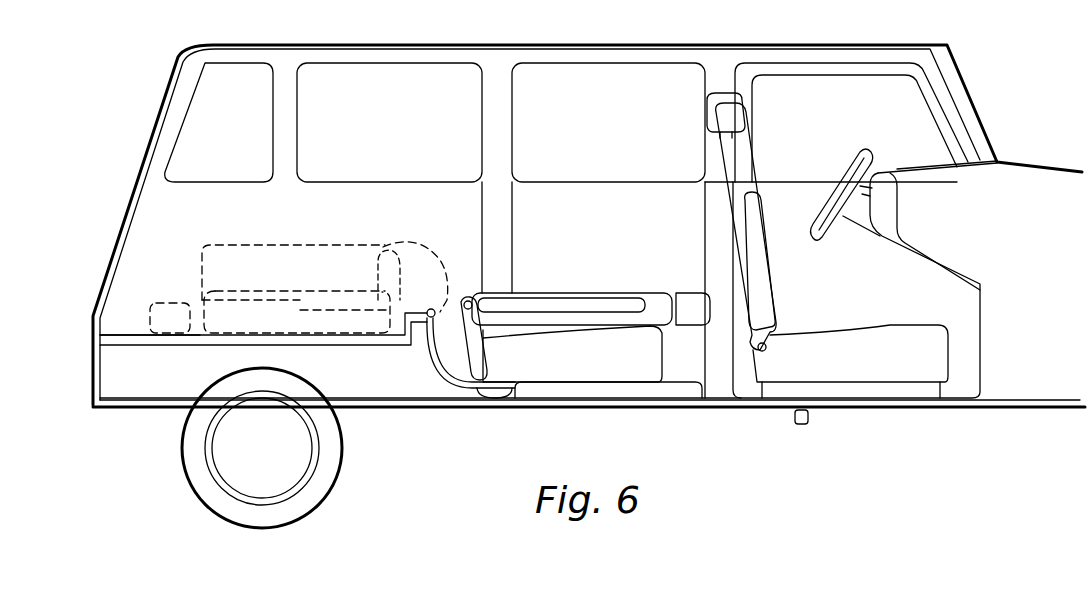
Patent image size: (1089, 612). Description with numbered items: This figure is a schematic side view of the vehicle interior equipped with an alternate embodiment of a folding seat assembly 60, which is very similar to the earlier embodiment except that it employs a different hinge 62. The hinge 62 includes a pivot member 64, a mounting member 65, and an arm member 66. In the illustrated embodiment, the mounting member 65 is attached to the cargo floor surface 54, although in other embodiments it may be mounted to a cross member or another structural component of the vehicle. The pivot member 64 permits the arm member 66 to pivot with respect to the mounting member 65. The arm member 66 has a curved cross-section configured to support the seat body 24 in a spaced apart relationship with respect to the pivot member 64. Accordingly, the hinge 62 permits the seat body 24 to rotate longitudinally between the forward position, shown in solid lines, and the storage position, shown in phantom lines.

The seat body 24 is at (607, 293).
The cargo floor surface 54 is at (124, 337).
The folding seat assembly 60 is at (455, 243).
The hinge 62 is at (425, 366).
The pivot member 64 is at (440, 306).
The mounting member 65 is at (414, 306).
The arm member 66 is at (432, 361).